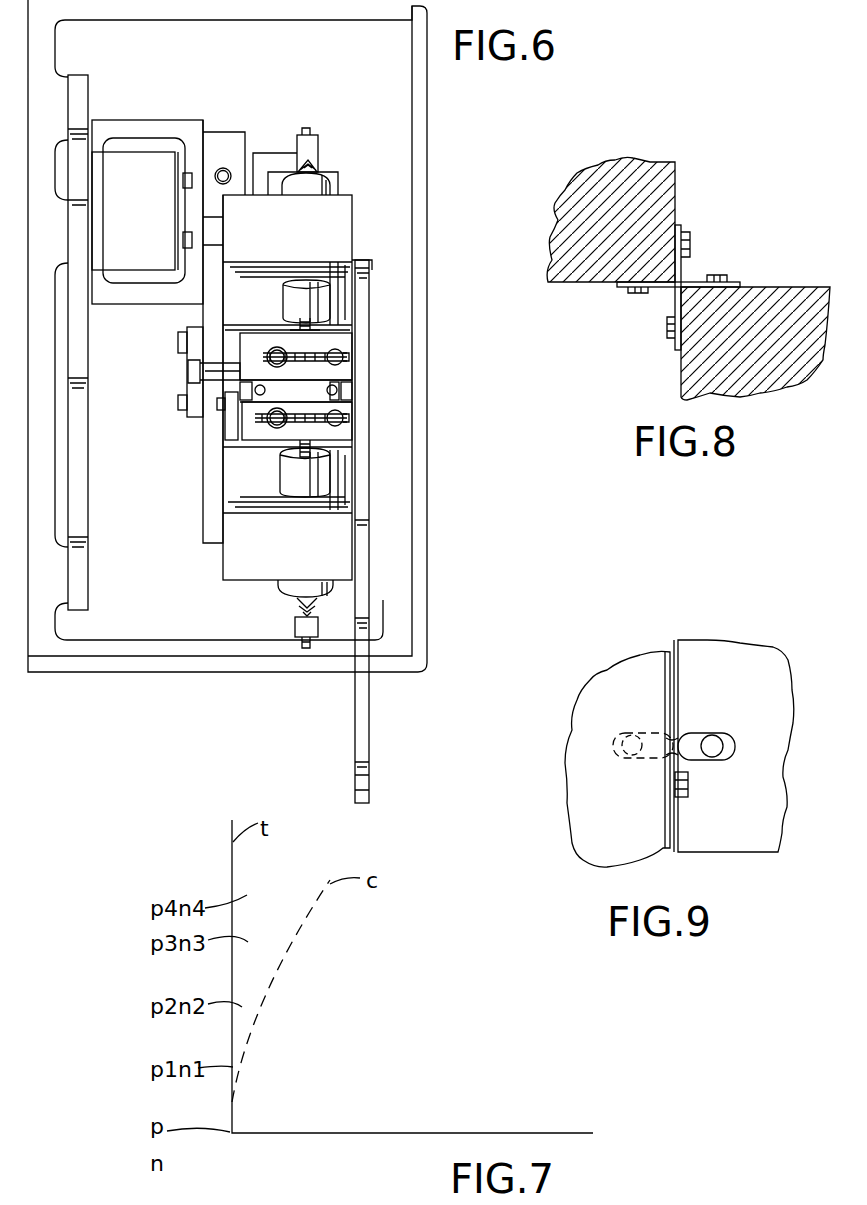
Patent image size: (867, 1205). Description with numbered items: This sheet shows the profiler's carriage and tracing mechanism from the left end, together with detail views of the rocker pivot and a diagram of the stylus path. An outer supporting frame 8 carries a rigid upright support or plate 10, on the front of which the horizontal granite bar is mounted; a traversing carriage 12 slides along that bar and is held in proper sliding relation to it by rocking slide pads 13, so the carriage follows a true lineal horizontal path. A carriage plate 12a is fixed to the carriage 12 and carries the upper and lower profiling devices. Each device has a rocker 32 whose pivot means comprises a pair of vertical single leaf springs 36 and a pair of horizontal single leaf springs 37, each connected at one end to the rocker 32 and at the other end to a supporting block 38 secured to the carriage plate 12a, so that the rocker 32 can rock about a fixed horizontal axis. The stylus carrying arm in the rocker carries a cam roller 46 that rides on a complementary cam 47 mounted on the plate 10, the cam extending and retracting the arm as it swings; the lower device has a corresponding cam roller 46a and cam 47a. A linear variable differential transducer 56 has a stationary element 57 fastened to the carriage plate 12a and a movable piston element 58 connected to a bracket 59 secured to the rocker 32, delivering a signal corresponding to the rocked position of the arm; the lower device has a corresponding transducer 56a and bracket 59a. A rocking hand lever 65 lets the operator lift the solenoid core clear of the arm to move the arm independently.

In FIG. 6, the outer supporting frame 8 is at (90, 650).
In FIG. 6, the upright support plate 10 is at (82, 100).
In FIG. 6, the traversing carriage 12 is at (122, 122).
In FIG. 6, the carriage plate 12a is at (210, 318).
In FIG. 6, the rocking slide pads 13 is at (183, 180).
In FIG. 6, the cam roller 46 is at (185, 370).
In FIG. 6, the cam 47 is at (187, 402).
In FIG. 6, the cam roller of lower device 46a is at (218, 405).
In FIG. 6, the cam of lower device 47a is at (228, 425).
In FIG. 6, the linear variable differential transducer 56 is at (322, 298).
In FIG. 6, the transducer of lower device 56a is at (320, 472).
In FIG. 6, the stationary element 57 is at (328, 182).
In FIG. 6, the movable piston element 58 is at (310, 318).
In FIG. 6, the bracket 59 is at (317, 143).
In FIG. 6, the bracket of lower device 59a is at (297, 622).
In FIG. 6, the rocking hand lever 65 is at (372, 762).
In FIG. 8, the rocker 32 is at (668, 175).
In FIG. 9, the rocker 32 is at (637, 668).
In FIG. 8, the vertical single leaf springs 36 is at (677, 227).
In FIG. 9, the vertical single leaf springs 36 is at (680, 797).
In FIG. 8, the horizontal single leaf springs 37 is at (740, 285).
In FIG. 9, the horizontal single leaf springs 37 is at (702, 735).
In FIG. 9, the supporting block 38 is at (688, 645).